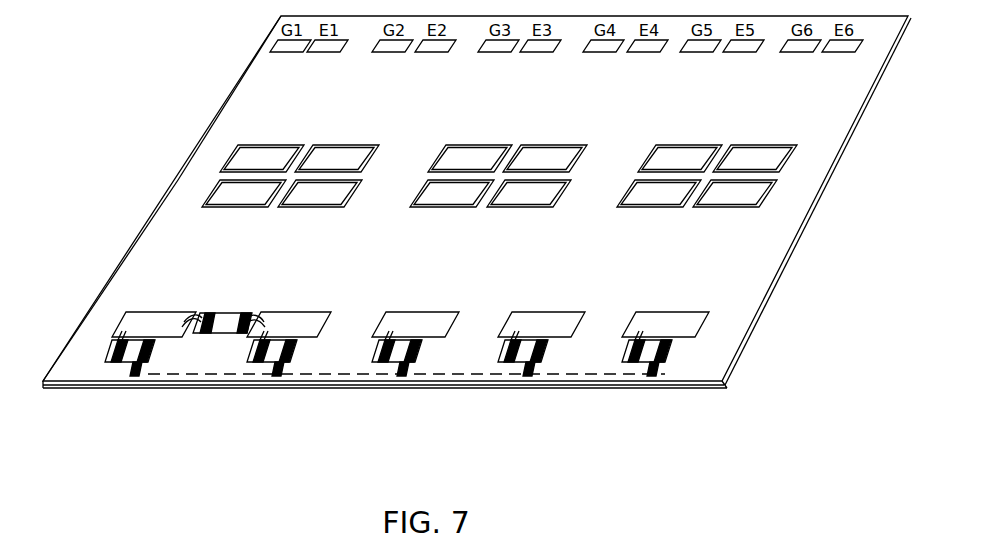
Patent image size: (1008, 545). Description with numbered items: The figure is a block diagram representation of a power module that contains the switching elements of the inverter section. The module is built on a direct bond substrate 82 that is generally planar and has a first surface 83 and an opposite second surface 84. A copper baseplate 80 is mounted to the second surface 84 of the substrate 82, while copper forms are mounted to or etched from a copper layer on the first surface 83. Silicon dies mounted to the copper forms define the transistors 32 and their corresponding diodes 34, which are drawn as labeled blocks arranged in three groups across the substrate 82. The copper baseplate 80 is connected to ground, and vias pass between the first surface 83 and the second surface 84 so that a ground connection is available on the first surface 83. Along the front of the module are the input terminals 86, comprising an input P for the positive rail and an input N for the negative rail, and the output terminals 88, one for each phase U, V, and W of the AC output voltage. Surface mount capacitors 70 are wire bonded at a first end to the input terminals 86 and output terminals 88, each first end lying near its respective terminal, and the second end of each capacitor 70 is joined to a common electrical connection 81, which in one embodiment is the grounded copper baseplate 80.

The copper baseplate 80 is at (742, 395).
The common electrical connection 81 is at (678, 373).
The direct bond substrate 82 is at (43, 382).
The first surface 83 is at (178, 180).
The second surface 84 is at (47, 394).
The input terminals 86 is at (273, 312).
The output terminals 88 is at (655, 312).
The surface mount capacitors 70 is at (130, 363).
The diodes 34 is at (350, 145).
The transistors 32 is at (318, 207).